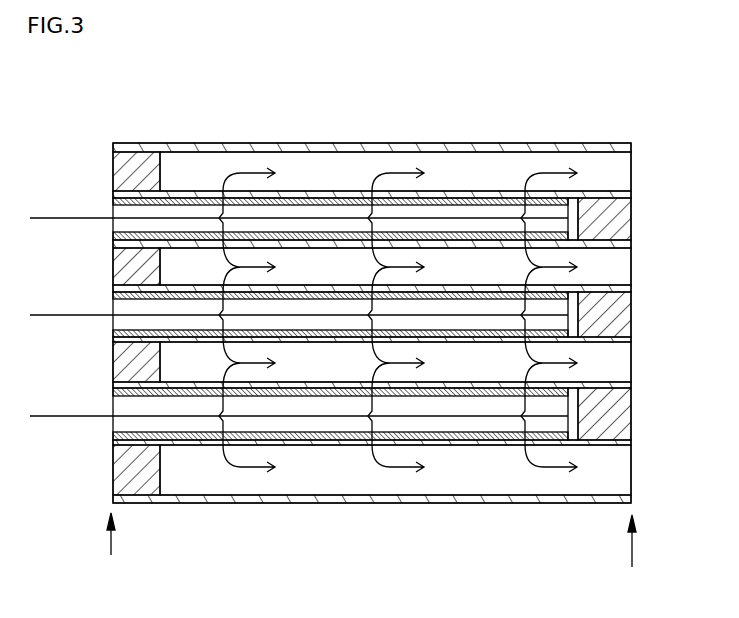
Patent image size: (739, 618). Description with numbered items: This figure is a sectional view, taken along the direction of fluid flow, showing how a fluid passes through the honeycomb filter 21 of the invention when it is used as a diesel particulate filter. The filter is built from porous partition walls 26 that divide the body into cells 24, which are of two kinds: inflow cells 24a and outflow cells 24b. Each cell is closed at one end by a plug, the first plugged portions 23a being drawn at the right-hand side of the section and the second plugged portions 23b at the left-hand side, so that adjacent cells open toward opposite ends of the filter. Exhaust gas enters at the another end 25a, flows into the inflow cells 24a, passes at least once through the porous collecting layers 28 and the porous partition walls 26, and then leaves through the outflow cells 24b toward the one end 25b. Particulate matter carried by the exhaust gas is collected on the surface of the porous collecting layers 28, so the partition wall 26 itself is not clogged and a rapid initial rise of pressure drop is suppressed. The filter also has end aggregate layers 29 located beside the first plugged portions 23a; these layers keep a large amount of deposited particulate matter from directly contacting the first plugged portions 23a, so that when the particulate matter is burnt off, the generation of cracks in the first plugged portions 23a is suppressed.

The honeycomb filter 21 is at (75, 88).
The first plugged portion 23a is at (596, 233).
The second plugged portion 23b is at (113, 265).
The cell 24 is at (330, 271).
The inflow cell 24a is at (358, 218).
The outflow cell 24b is at (296, 165).
The another end 25a is at (116, 552).
The one end 25b is at (643, 558).
The partition wall 26 is at (188, 145).
The collecting layer 28 is at (468, 392).
The end aggregate layer 29 is at (598, 226).